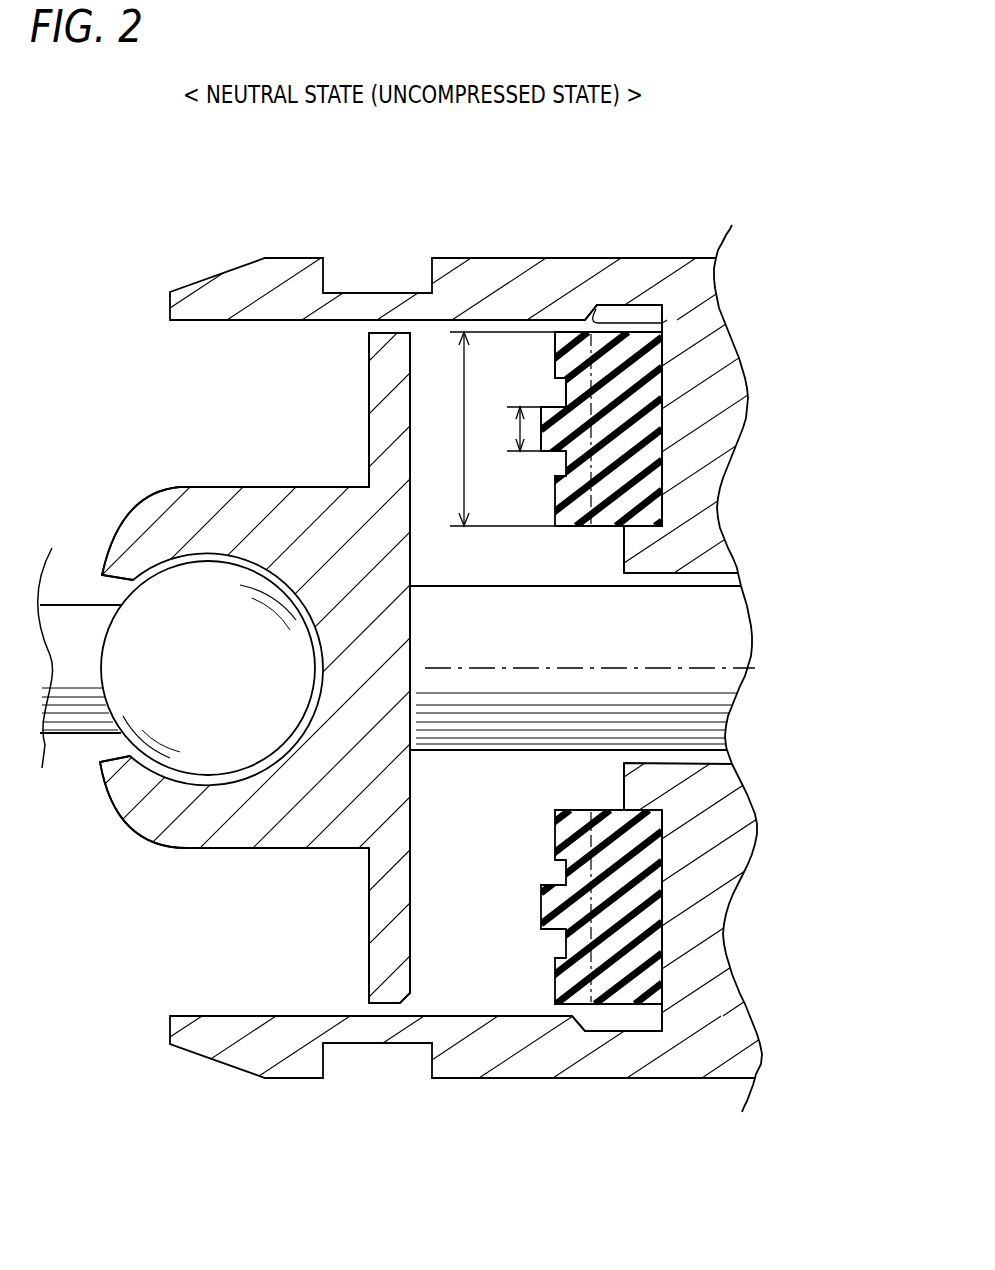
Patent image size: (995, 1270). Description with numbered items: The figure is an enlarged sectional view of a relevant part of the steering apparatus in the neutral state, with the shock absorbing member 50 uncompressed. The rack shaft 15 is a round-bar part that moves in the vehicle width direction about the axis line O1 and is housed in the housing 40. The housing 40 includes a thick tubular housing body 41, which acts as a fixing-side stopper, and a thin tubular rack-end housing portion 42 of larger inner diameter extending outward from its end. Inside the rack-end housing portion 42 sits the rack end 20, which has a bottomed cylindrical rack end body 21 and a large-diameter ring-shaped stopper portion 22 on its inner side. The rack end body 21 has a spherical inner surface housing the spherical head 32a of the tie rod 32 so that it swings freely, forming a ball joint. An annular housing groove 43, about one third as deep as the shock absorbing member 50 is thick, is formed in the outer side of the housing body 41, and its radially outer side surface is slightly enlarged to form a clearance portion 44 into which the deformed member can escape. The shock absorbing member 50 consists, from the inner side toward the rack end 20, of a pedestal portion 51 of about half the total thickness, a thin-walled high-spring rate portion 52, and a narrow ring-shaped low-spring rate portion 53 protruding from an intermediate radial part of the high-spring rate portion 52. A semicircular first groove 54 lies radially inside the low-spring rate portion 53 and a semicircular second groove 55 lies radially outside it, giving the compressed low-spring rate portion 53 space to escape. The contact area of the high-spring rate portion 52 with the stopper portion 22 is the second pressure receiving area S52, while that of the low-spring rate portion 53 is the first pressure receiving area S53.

The rack shaft 15 is at (692, 754).
The rack end 20 is at (237, 668).
The rack end body 21 is at (147, 503).
The stopper portion 22 is at (369, 403).
The tie rod 32 is at (177, 734).
The spherical head 32a is at (215, 757).
The housing 40 is at (473, 633).
The housing body 41 is at (712, 256).
The rack-end housing portion 42 is at (303, 256).
The housing groove 43 is at (660, 376).
The clearance portion 44 is at (640, 312).
The shock absorbing member 50 is at (573, 592).
The pedestal portion 51 is at (630, 323).
The high-spring rate portion 52 is at (577, 326).
The low-spring rate portion 53 is at (541, 405).
The first groove 54 is at (559, 473).
The second groove 55 is at (555, 378).
The second pressure receiving area S52 is at (486, 429).
The first pressure receiving area S53 is at (506, 429).
The axis line O1 is at (606, 669).